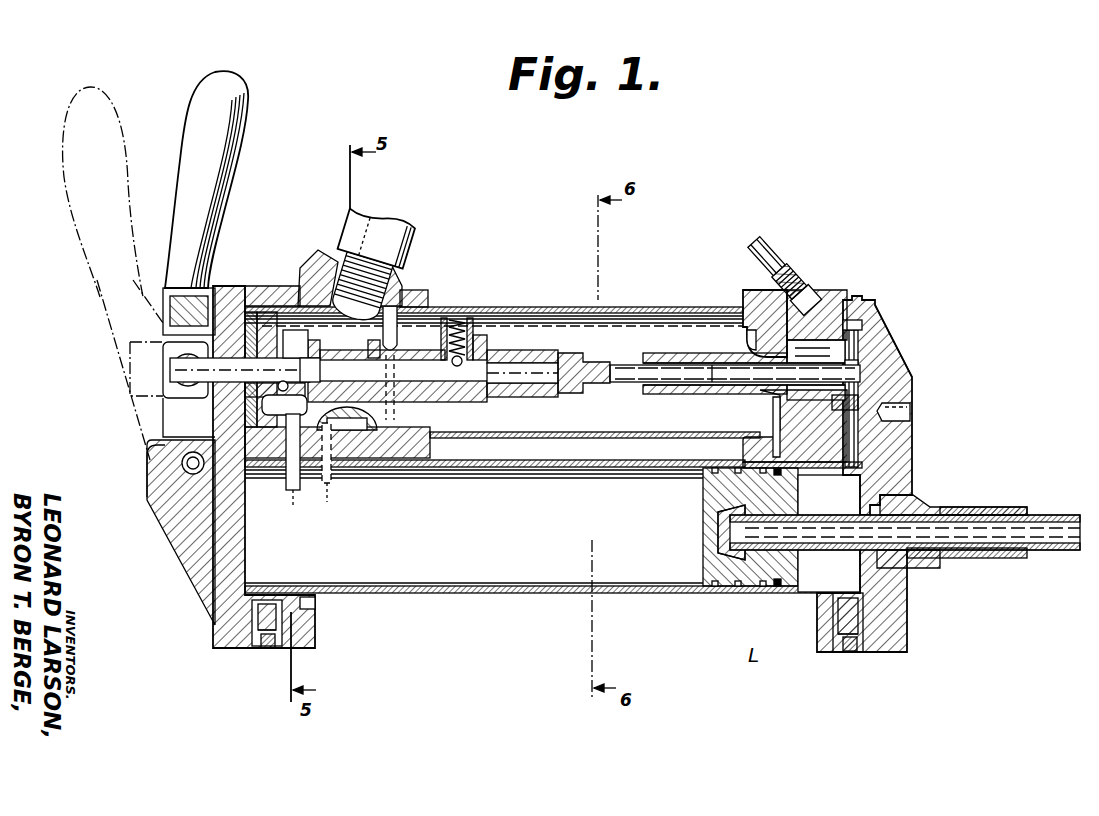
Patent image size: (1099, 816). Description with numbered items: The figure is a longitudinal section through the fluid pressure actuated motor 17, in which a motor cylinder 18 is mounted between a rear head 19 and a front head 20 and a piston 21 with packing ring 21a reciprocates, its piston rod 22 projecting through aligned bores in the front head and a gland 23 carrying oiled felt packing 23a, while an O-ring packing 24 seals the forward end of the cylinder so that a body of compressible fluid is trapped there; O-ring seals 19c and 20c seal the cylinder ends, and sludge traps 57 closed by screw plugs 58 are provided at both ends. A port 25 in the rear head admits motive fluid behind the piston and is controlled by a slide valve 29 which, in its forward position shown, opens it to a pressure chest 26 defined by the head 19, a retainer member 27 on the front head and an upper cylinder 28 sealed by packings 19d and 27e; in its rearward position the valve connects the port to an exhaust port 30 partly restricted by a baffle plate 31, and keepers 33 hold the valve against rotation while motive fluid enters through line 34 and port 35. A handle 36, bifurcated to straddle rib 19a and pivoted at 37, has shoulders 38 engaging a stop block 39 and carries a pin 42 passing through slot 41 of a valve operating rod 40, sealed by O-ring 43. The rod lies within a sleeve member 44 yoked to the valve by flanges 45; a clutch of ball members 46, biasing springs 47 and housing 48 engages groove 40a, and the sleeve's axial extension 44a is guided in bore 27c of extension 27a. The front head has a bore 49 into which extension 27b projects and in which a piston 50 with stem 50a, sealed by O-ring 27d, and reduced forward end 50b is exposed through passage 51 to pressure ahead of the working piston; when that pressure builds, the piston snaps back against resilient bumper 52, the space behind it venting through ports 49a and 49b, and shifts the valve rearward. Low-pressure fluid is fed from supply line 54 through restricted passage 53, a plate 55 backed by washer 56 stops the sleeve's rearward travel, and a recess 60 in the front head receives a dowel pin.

The fluid pressure actuated motor 17 is at (600, 592).
The motor cylinder 18 is at (450, 594).
The rear head 19 is at (190, 588).
The rib 19a is at (160, 521).
The O-ring seal 19c is at (316, 612).
The packing 19d is at (392, 342).
The front head 20 is at (902, 614).
The O-ring seal 20c is at (826, 620).
The piston 21 is at (705, 556).
The packing ring 21a is at (762, 597).
The piston rod 22 is at (1060, 516).
The sleeve or gland 23 is at (985, 560).
The oiled felt packing 23a is at (914, 540).
The fluid tight packing 24 is at (882, 496).
The port 25 is at (290, 486).
The pressure chest 26 is at (558, 342).
The retainer member 27 is at (746, 298).
The extension 27a is at (667, 355).
The extension 27b is at (840, 340).
The bore 27c is at (673, 384).
The O-ring seal 27d is at (748, 356).
The packing 27e is at (744, 306).
The upper cylinder 28 is at (612, 307).
The slide valve 29 is at (422, 417).
The exhaust port 30 is at (330, 484).
The baffle plate 31 is at (432, 448).
The guides or keepers 33 is at (292, 404).
The line 34 is at (386, 216).
The port 35 is at (309, 280).
The handle 36 is at (64, 165).
The pivot 37 is at (182, 468).
The shoulders 38 is at (152, 452).
The stop block 39 is at (150, 480).
The valve operating rod 40 is at (301, 360).
The groove 40a is at (546, 393).
The slot 41 is at (178, 380).
The pin 42 is at (178, 362).
The O-ring seal 43 is at (212, 352).
The sleeve member 44 is at (401, 298).
The axial extension 44a is at (622, 384).
The flanges 45 is at (368, 345).
The ball members 46 is at (484, 345).
The biasing springs 47 is at (471, 334).
The housing 48 is at (452, 328).
The bore 49 is at (863, 338).
The vent port 49a is at (752, 398).
The vent port 49b is at (743, 455).
The piston 50 is at (856, 362).
The stem 50a is at (726, 384).
The forward end portion 50b is at (862, 378).
The passage 51 is at (862, 445).
The resilient bumper 52 is at (862, 394).
The restricted passage 53 is at (802, 340).
The supply line 54 is at (784, 242).
The plate 55 is at (270, 303).
The washer 56 is at (247, 298).
The sludge traps 57 is at (255, 627).
The screw plugs 58 is at (265, 650).
The recess 60 is at (900, 415).